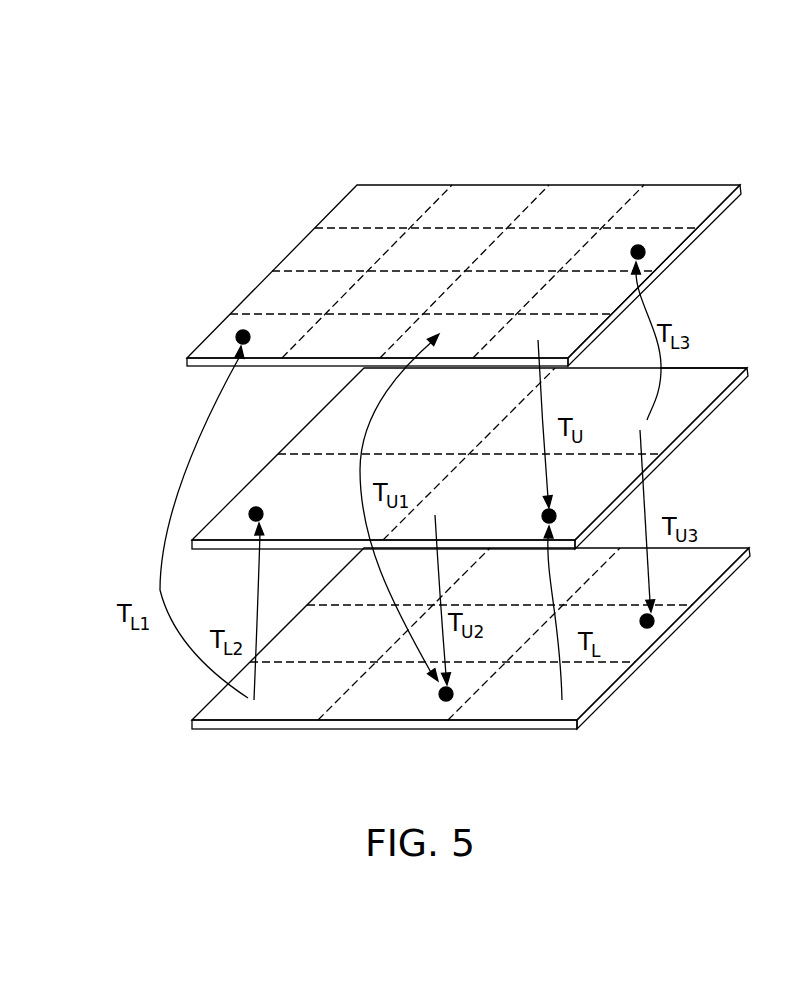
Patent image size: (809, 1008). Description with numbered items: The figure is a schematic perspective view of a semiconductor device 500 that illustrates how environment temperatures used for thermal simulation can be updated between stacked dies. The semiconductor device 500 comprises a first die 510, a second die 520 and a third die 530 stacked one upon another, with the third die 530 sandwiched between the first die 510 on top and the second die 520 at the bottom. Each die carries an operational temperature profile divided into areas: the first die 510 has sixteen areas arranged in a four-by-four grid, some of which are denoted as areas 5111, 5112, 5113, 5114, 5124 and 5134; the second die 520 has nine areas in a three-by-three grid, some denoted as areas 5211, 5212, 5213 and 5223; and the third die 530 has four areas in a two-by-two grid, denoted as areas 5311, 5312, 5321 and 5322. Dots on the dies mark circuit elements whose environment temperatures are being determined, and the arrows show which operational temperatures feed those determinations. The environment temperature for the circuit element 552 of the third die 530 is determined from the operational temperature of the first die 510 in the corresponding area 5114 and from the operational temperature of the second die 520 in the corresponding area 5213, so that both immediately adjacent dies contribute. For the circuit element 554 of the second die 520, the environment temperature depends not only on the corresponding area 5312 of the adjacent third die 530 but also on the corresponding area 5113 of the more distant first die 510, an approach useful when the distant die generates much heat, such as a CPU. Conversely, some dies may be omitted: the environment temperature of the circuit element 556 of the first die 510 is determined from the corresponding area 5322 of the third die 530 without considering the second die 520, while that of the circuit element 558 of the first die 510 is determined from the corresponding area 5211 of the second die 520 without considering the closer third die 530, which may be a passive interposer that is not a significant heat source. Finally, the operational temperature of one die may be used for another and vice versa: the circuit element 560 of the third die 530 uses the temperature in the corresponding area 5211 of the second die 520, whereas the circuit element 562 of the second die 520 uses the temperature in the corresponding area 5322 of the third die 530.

The semiconductor device 500 is at (622, 104).
The first die 510 is at (723, 210).
The second die 520 is at (725, 580).
The third die 530 is at (737, 390).
The area of first die 5111 is at (207, 346).
The area of first die 5112 is at (318, 340).
The area of first die 5113 is at (447, 345).
The area of first die 5114 is at (573, 337).
The area of first die 5124 is at (643, 273).
The area of first die 5134 is at (667, 245).
The area of third die 5311 is at (263, 490).
The area of third die 5312 is at (623, 473).
The area of third die 5321 is at (320, 428).
The area of third die 5322 is at (700, 380).
The area of second die 5211 is at (227, 710).
The area of second die 5212 is at (380, 710).
The area of second die 5213 is at (548, 710).
The area of second die 5223 is at (647, 637).
The circuit element 552 is at (557, 519).
The circuit element 554 is at (445, 705).
The circuit element 556 is at (641, 243).
The circuit element 558 is at (242, 328).
The circuit element 560 is at (263, 520).
The circuit element 562 is at (655, 625).